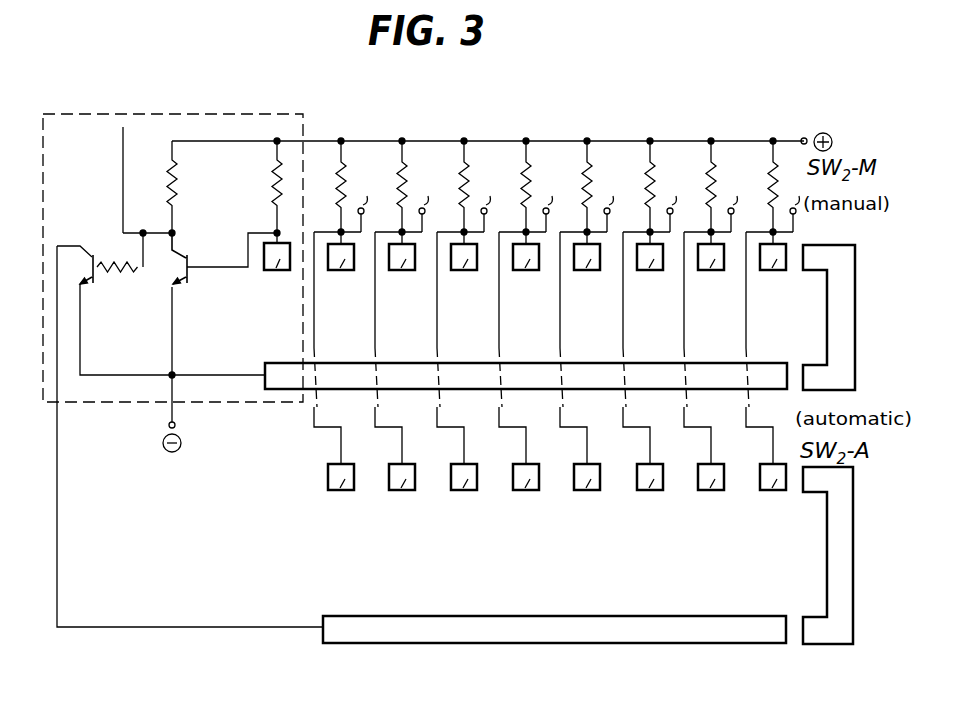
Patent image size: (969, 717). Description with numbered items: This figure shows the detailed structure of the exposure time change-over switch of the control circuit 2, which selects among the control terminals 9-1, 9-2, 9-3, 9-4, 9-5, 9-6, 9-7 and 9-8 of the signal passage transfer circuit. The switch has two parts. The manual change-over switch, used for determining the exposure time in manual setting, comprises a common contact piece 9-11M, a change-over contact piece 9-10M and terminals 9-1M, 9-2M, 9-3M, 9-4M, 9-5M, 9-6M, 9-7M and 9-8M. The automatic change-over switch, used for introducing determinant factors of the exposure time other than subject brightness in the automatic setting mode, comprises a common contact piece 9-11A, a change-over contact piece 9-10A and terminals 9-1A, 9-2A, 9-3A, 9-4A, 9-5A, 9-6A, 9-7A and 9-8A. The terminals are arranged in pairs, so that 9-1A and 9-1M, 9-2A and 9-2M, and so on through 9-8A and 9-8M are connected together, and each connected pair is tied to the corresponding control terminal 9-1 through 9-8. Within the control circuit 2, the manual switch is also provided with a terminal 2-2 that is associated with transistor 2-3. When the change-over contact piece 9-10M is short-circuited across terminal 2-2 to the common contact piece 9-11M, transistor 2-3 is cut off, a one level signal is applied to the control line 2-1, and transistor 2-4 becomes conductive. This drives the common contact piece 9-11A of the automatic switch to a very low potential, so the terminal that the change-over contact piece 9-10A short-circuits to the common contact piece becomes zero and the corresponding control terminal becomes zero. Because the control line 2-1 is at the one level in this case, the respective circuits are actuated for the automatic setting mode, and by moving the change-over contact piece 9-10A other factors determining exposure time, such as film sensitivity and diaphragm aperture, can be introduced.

The control circuit 2 is at (267, 112).
The control line 2-1 is at (122, 167).
The terminal 2-2 is at (276, 272).
The transistor 2-3 is at (193, 273).
The transistor 2-4 is at (98, 273).
The control terminal 9-1 is at (789, 186).
The control terminal 9-2 is at (729, 186).
The control terminal 9-3 is at (668, 186).
The control terminal 9-4 is at (605, 186).
The control terminal 9-5 is at (544, 186).
The control terminal 9-6 is at (482, 186).
The control terminal 9-7 is at (420, 186).
The control terminal 9-8 is at (359, 186).
The terminal 9-1M is at (777, 269).
The terminal 9-2M is at (713, 269).
The terminal 9-3M is at (652, 269).
The terminal 9-4M is at (589, 269).
The terminal 9-5M is at (528, 269).
The terminal 9-6M is at (466, 269).
The terminal 9-7M is at (404, 269).
The terminal 9-8M is at (343, 269).
The terminal 9-1A is at (768, 492).
The terminal 9-2A is at (708, 492).
The terminal 9-3A is at (645, 492).
The terminal 9-4A is at (587, 492).
The terminal 9-5A is at (521, 492).
The terminal 9-6A is at (459, 492).
The terminal 9-7A is at (397, 492).
The terminal 9-8A is at (336, 492).
The change-over contact piece 9-10M is at (838, 298).
The change-over contact piece 9-10A is at (837, 535).
The common contact piece 9-11M is at (527, 362).
The common contact piece 9-11A is at (488, 616).